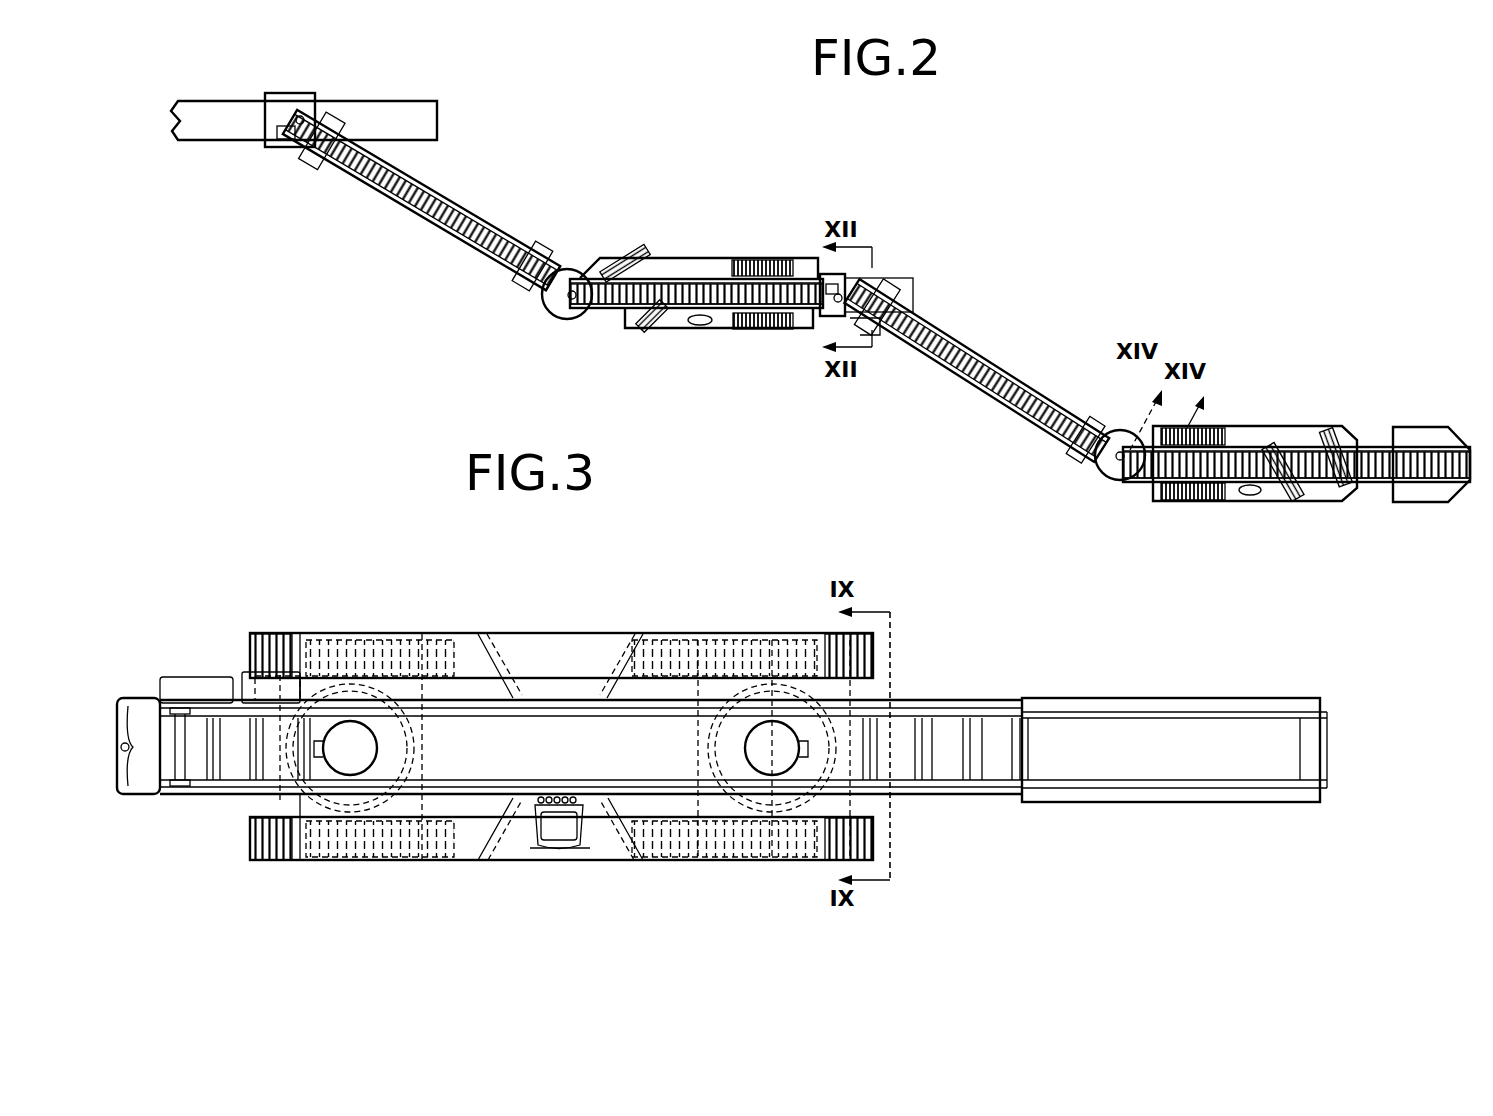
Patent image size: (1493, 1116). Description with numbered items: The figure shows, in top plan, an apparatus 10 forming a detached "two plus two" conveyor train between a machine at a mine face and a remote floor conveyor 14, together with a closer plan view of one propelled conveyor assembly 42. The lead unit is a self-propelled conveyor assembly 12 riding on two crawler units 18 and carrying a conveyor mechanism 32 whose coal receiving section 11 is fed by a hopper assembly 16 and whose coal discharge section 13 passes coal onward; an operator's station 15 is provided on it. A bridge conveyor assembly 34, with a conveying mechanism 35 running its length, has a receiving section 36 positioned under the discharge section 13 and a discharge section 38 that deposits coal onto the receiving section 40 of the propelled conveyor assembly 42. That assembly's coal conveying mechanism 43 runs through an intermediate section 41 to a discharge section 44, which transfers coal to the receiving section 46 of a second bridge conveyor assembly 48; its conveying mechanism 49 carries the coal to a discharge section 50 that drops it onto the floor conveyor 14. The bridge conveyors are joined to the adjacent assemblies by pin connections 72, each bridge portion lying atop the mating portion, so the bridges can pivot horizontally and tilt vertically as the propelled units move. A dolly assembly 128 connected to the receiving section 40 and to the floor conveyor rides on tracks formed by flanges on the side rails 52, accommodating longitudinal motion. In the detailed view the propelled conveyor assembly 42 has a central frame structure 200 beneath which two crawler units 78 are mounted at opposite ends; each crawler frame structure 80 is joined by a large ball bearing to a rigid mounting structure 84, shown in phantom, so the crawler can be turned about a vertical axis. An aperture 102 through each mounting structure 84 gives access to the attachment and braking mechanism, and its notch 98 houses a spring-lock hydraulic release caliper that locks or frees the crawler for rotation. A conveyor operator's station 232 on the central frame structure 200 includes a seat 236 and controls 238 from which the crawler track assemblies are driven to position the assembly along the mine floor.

In FIG. 2, the apparatus 10 is at (938, 210).
In FIG. 2, the coal receiving section 11 is at (1458, 488).
In FIG. 2, the propelled conveyor assembly 12 is at (1330, 506).
In FIG. 2, the coal discharge section 13 is at (1178, 488).
In FIG. 2, the floor conveyor 14 is at (218, 150).
In FIG. 2, the operator's station 15 is at (1250, 498).
In FIG. 2, the hopper assembly 16 is at (1410, 505).
In FIG. 2, the crawler units 18 is at (1218, 428).
In FIG. 2, the conveyor mechanism 32 is at (1432, 465).
In FIG. 2, the bridge conveyor assembly 34 is at (995, 418).
In FIG. 2, the conveying mechanism 35 is at (948, 335).
In FIG. 2, the receiving section 36 is at (1097, 462).
In FIG. 2, the discharge section 38 is at (876, 340).
In FIG. 2, the receiving section 40 is at (908, 288).
In FIG. 3, the receiving section 40 is at (1180, 732).
In FIG. 2, the intermediate section 41 is at (778, 324).
In FIG. 3, the intermediate section 41 is at (922, 735).
In FIG. 2, the propelled conveyor assembly 42 is at (712, 252).
In FIG. 3, the propelled conveyor assembly 42 is at (262, 540).
In FIG. 2, the coal conveying mechanism 43 is at (655, 285).
In FIG. 2, the discharge section 44 is at (582, 320).
In FIG. 3, the discharge section 44 is at (195, 762).
In FIG. 2, the receiving section 46 is at (535, 268).
In FIG. 2, the second bridge conveyor assembly 48 is at (465, 195).
In FIG. 2, the conveying mechanism 49 is at (410, 205).
In FIG. 2, the discharge section 50 is at (292, 145).
In FIG. 2, the side rails 52 is at (515, 238).
In FIG. 2, the pin connections 72 is at (272, 100).
In FIG. 2, the crawler units 78 is at (640, 248).
In FIG. 3, the crawler units 78 is at (246, 645).
In FIG. 3, the crawler frame structure 80 is at (262, 815).
In FIG. 3, the rigid mounting structures 84 is at (418, 755).
In FIG. 3, the notch 98 is at (848, 753).
In FIG. 3, the aperture 102 is at (742, 750).
In FIG. 2, the dolly assembly 128 is at (295, 97).
In FIG. 3, the central frame structure 200 is at (645, 632).
In FIG. 2, the conveyor operator's station 232 is at (700, 326).
In FIG. 3, the conveyor operator's station 232 is at (522, 858).
In FIG. 3, the seat 236 is at (592, 850).
In FIG. 3, the controls 238 is at (525, 815).